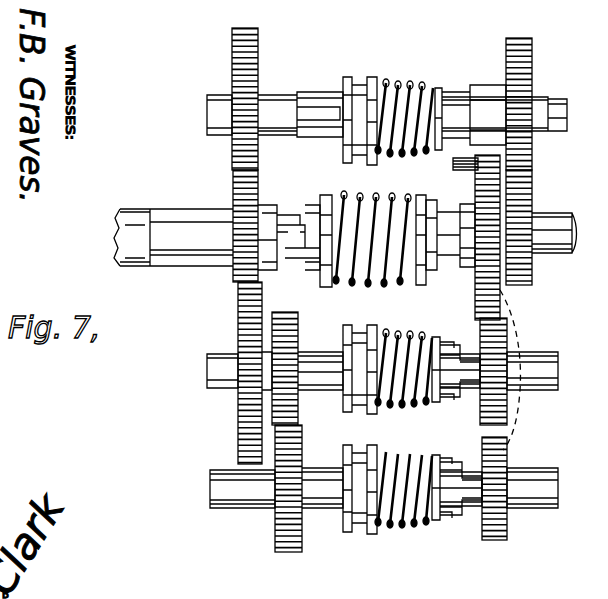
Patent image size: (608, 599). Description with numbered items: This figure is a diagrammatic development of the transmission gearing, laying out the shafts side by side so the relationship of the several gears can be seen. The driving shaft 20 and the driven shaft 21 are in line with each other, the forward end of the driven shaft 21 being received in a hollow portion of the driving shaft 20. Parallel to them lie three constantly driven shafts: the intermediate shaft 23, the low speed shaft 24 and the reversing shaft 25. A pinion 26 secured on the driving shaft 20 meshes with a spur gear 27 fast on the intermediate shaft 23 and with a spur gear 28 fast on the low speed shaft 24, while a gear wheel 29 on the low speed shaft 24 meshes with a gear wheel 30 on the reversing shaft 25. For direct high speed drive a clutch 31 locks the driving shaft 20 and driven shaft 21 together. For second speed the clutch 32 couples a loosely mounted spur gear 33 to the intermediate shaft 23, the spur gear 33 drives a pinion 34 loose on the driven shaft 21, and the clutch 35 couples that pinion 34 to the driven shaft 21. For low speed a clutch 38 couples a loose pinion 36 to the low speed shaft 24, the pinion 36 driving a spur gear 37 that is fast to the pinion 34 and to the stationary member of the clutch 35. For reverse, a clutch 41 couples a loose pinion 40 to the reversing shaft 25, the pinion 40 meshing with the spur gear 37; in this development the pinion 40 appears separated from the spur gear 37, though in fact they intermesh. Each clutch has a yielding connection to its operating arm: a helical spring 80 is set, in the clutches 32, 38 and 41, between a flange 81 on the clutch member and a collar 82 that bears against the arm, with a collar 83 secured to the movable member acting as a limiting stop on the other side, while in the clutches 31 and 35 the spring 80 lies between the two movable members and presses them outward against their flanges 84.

The driving shaft 20 is at (173, 222).
The driven shaft 21 is at (560, 230).
The intermediate shaft 23 is at (552, 112).
The low speed shaft 24 is at (556, 366).
The reversing shaft 25 is at (556, 486).
The pinion 26 is at (240, 262).
The spur gear 27 is at (259, 59).
The spur gear 28 is at (240, 424).
The gear wheel 29 is at (298, 328).
The gear wheel 30 is at (278, 552).
The clutch 31 is at (289, 220).
The clutch 32 is at (474, 110).
The spur gear 33 is at (532, 62).
The pinion 34 is at (530, 210).
The clutch 35 is at (450, 217).
The pinion 36 is at (500, 407).
The spur gear 37 is at (500, 303).
The clutch 38 is at (460, 356).
The pinion 40 is at (507, 524).
The clutch 41 is at (461, 474).
The helical spring 80 is at (400, 404).
The flange 81 is at (438, 88).
The collar 82 is at (372, 90).
The collar 83 is at (343, 137).
The flange 84 is at (327, 285).